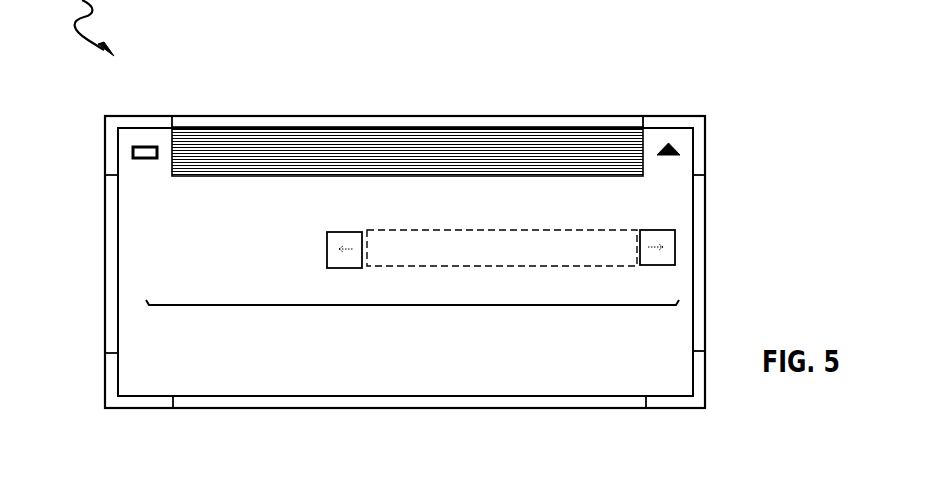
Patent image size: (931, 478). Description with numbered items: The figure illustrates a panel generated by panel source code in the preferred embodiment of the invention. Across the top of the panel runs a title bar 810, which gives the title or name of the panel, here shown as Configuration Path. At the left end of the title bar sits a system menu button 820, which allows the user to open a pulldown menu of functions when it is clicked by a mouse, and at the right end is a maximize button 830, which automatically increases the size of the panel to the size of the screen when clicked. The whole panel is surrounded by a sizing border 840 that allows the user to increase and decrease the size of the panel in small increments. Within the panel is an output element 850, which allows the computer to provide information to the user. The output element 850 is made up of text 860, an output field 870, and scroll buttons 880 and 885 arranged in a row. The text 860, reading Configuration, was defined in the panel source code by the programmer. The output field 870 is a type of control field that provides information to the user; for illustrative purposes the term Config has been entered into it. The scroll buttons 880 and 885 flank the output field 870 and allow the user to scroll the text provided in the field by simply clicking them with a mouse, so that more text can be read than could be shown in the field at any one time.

The title bar 810 is at (533, 135).
The system menu button 820 is at (146, 133).
The maximize button 830 is at (668, 137).
The sizing border 840 is at (685, 406).
The output element 850 is at (413, 305).
The text 860 is at (242, 229).
The output field 870 is at (505, 236).
The scroll button 880 is at (357, 231).
The scroll button 885 is at (643, 230).